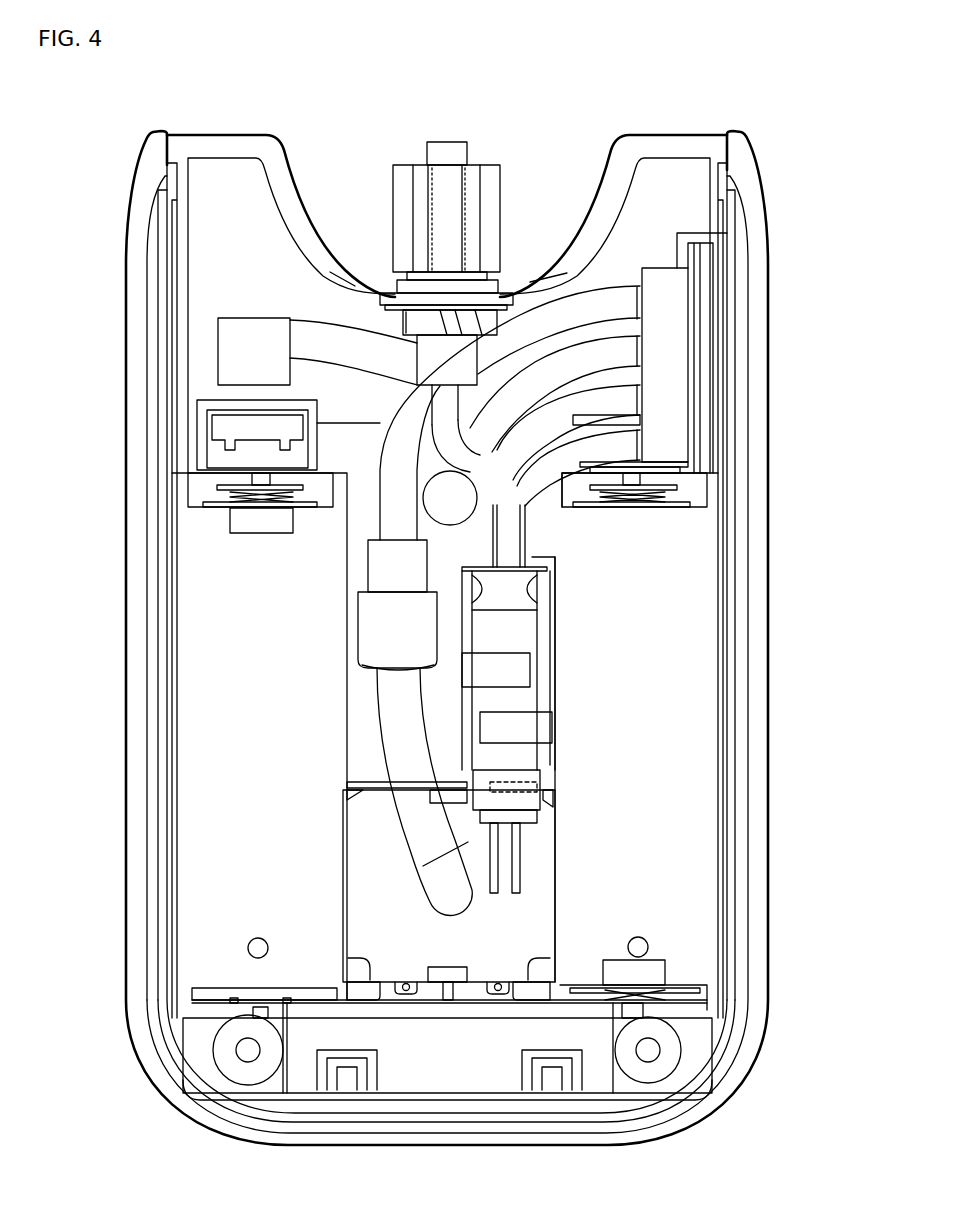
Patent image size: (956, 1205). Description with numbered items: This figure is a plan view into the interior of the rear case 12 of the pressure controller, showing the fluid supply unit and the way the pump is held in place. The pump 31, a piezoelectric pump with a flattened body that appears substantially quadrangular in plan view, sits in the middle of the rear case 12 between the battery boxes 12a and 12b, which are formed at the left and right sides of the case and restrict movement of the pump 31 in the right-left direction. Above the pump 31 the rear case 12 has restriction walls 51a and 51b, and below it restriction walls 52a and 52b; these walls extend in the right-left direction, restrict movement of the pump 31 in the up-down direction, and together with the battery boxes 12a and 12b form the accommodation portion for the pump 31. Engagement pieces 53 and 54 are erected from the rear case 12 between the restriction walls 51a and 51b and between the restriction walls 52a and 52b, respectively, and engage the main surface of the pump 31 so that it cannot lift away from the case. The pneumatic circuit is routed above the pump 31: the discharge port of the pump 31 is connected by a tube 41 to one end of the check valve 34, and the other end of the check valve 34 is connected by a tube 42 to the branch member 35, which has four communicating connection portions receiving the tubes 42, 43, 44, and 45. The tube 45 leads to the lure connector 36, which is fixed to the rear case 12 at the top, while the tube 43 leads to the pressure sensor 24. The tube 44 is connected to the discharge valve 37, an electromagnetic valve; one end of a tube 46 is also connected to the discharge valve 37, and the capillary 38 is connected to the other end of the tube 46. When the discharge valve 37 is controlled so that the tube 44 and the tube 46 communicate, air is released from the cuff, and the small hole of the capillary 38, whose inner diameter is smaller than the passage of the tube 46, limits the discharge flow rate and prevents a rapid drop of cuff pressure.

The rear case 12 is at (639, 131).
The battery box 12a is at (200, 768).
The battery box 12b is at (697, 768).
The pressure sensor 24 is at (258, 319).
The pump 31 is at (360, 900).
The check valve 34 is at (370, 646).
The branch member 35 is at (660, 268).
The lure connector 36 is at (392, 182).
The discharge valve 37 is at (548, 692).
The capillary 38 is at (478, 425).
The tube 41 is at (383, 728).
The tube 42 is at (641, 302).
The tube 43 is at (641, 351).
The tube 44 is at (641, 402).
The tube 45 is at (641, 442).
The tube 46 is at (512, 530).
The restriction wall 51a is at (362, 786).
The restriction wall 51b is at (553, 802).
The restriction wall 52a is at (355, 978).
The restriction wall 52b is at (550, 978).
The engagement piece 53 is at (450, 805).
The engagement piece 54 is at (452, 967).